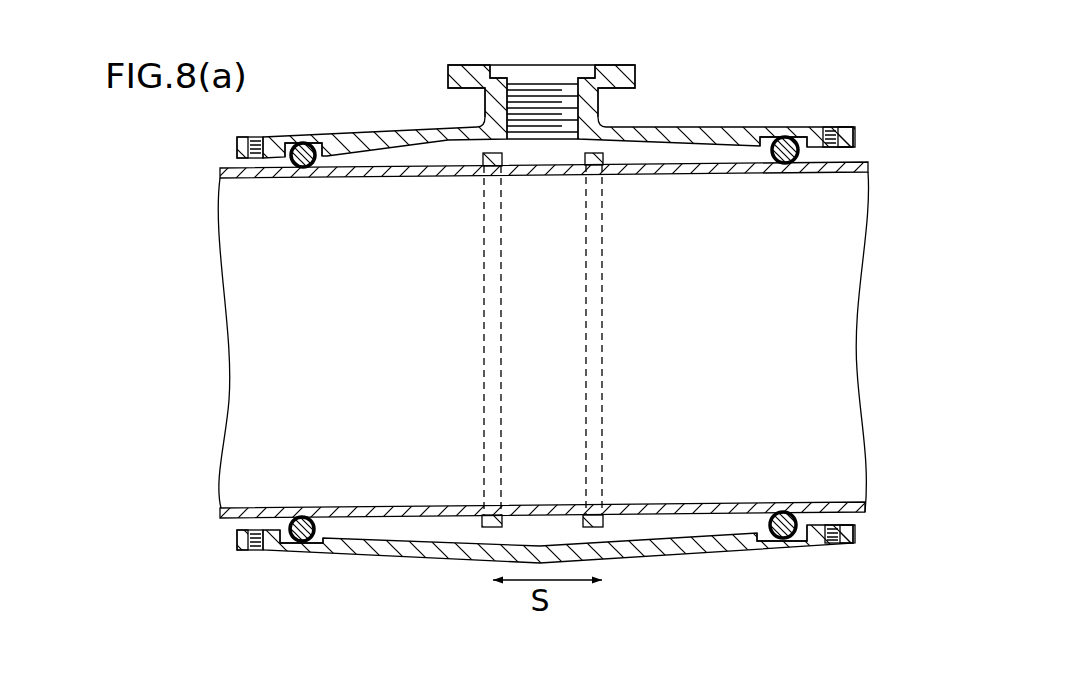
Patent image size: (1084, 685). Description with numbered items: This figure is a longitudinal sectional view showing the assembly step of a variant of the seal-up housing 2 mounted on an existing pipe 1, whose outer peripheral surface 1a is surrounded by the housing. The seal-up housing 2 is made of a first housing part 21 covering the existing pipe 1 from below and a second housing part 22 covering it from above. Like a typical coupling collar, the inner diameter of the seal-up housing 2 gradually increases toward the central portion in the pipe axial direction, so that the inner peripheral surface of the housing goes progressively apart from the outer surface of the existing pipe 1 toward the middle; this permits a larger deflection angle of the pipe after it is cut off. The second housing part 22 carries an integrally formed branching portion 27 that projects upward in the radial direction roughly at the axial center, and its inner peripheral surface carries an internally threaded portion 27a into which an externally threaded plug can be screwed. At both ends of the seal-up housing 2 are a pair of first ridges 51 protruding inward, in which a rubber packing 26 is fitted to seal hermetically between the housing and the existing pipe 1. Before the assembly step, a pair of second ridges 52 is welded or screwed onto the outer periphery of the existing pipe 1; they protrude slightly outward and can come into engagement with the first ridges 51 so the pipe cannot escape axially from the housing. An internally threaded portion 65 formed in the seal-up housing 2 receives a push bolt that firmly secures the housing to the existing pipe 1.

The existing pipe 1 is at (543, 340).
The pipe outer surface 1a is at (418, 506).
The seal-up housing 2 is at (342, 82).
The first housing part 21 is at (380, 553).
The second housing part 22 is at (559, 111).
The rubber packing 26 is at (300, 140).
The branching portion 27 is at (547, 102).
The internally threaded portion 27a is at (577, 112).
The first ridges 51 is at (318, 163).
The second ridges 52 is at (485, 170).
The internally threaded portion 65 is at (238, 148).